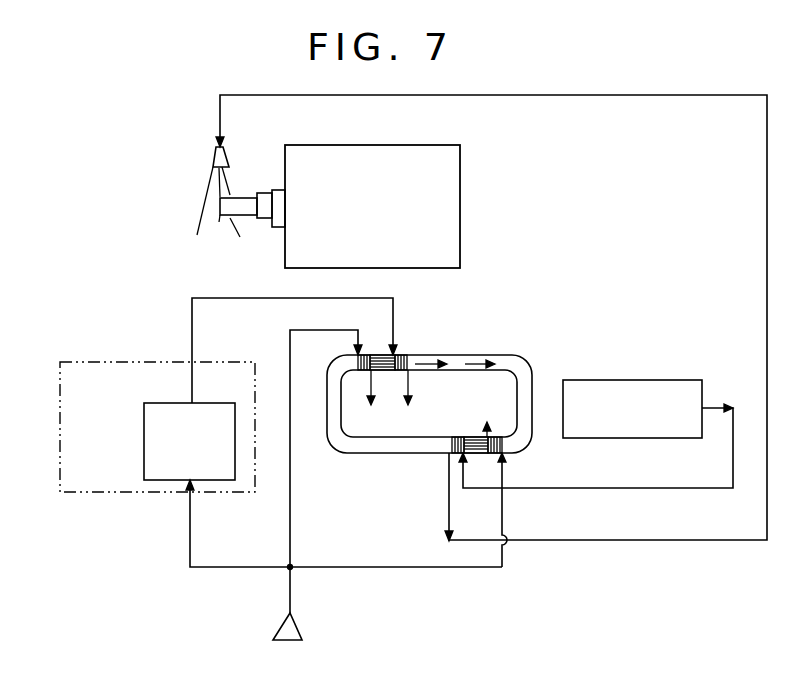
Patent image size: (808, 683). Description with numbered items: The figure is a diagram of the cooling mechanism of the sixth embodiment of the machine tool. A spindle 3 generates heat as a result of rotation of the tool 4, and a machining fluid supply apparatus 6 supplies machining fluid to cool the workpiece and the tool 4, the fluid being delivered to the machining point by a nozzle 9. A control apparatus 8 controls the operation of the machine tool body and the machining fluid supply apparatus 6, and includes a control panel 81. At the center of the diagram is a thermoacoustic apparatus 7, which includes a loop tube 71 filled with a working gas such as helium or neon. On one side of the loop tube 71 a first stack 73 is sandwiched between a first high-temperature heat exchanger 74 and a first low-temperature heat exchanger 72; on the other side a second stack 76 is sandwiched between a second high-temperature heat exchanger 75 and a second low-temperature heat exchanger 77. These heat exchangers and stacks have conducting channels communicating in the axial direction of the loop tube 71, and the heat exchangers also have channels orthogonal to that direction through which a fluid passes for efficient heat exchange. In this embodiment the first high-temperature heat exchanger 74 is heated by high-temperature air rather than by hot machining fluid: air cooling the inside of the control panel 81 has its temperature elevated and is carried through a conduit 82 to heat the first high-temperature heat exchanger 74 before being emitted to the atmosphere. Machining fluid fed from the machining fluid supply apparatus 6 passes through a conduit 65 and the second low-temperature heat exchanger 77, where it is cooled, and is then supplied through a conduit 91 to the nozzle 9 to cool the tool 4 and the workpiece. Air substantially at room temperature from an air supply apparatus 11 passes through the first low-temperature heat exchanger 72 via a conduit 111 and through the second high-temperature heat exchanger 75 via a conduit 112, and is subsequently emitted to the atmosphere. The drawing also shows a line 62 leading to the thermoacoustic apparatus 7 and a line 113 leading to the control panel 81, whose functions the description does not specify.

The spindle 3 is at (365, 163).
The tool 4 is at (246, 205).
The nozzle 9 is at (215, 158).
The conduit 91 is at (487, 96).
The control apparatus 8 is at (157, 368).
The control panel 81 is at (217, 470).
The conduit 82 is at (290, 299).
The thermoacoustic apparatus 7 is at (510, 331).
The loop tube 71 is at (380, 443).
The first low-temperature heat exchanger 72 is at (358, 358).
The first stack 73 is at (382, 362).
The first high-temperature heat exchanger 74 is at (407, 357).
The second high-temperature heat exchanger 75 is at (493, 446).
The second stack 76 is at (480, 443).
The second low-temperature heat exchanger 77 is at (454, 445).
The machining fluid supply apparatus 6 is at (697, 387).
The conduit 65 is at (468, 465).
The return pipe 62 is at (505, 467).
The air supply apparatus 11 is at (287, 627).
The conduit 111 is at (292, 538).
The conduit 112 is at (445, 568).
The control panel connection line 113 is at (208, 568).